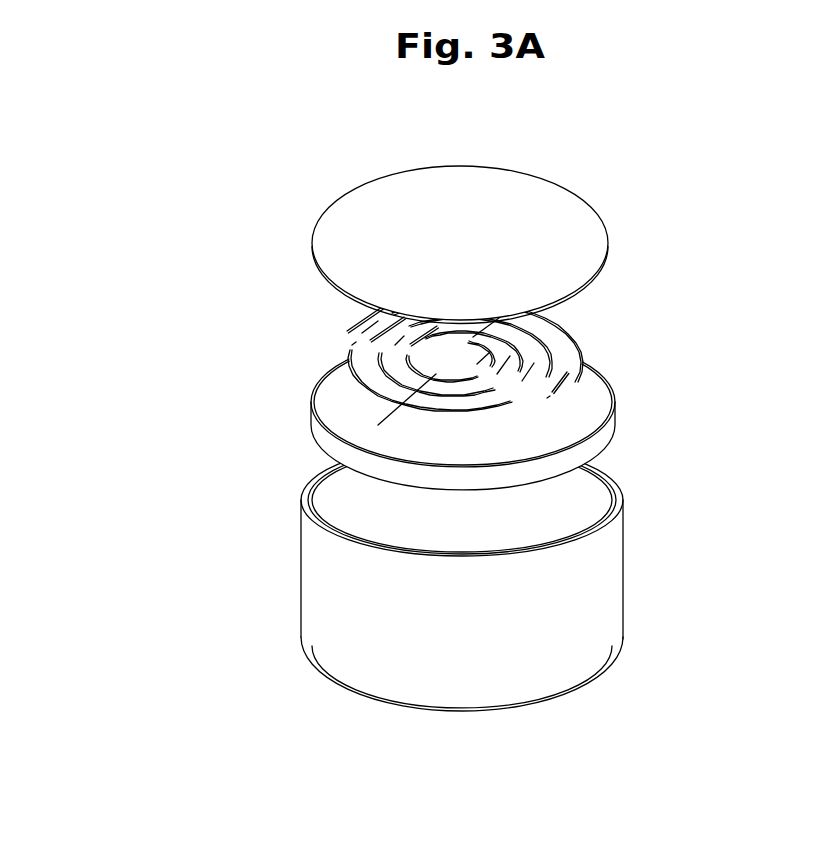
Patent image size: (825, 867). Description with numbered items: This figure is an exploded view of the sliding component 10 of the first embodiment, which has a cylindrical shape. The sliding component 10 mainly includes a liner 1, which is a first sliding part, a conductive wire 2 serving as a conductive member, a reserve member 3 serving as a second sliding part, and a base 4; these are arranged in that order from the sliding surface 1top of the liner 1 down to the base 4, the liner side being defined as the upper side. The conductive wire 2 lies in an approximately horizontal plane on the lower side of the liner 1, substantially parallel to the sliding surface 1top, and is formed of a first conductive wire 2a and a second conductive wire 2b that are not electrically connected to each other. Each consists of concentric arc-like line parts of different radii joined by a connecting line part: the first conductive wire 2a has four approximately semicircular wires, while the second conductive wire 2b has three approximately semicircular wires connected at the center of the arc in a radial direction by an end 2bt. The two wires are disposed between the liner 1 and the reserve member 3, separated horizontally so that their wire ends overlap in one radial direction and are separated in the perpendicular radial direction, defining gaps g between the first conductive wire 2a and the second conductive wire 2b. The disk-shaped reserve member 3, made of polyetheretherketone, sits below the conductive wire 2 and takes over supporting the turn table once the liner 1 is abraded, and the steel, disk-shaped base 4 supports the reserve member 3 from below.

The sliding component 10 is at (266, 226).
The liner 1 is at (610, 250).
The sliding surface 1top is at (568, 230).
The conductive wire 2 is at (703, 308).
The first conductive wire 2a is at (573, 323).
The second conductive wire 2b is at (580, 360).
The end 2bt is at (378, 425).
The reserve member 3 is at (602, 430).
The base 4 is at (608, 578).
The gaps g is at (343, 341).